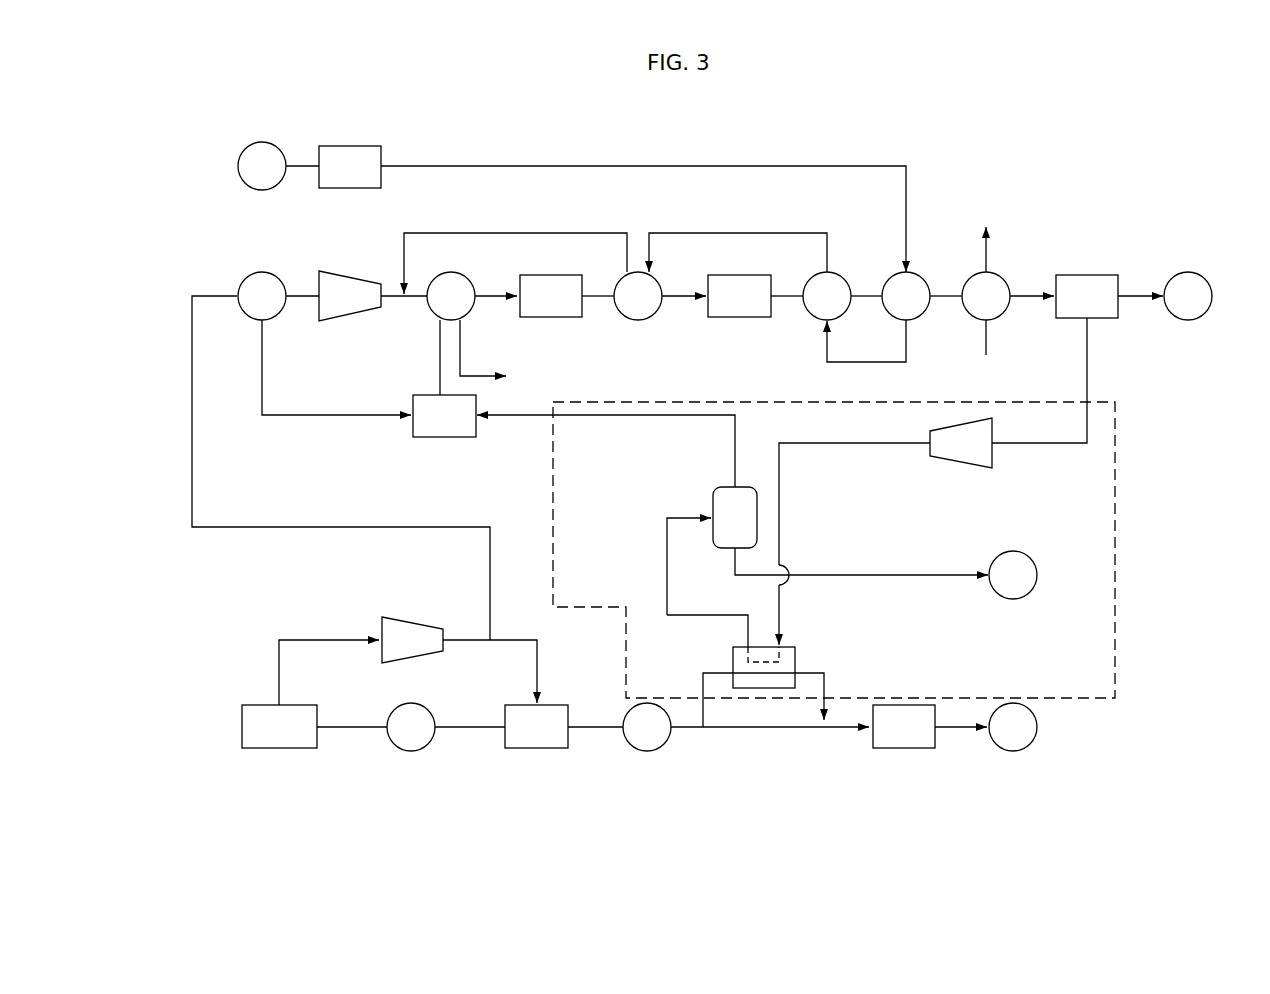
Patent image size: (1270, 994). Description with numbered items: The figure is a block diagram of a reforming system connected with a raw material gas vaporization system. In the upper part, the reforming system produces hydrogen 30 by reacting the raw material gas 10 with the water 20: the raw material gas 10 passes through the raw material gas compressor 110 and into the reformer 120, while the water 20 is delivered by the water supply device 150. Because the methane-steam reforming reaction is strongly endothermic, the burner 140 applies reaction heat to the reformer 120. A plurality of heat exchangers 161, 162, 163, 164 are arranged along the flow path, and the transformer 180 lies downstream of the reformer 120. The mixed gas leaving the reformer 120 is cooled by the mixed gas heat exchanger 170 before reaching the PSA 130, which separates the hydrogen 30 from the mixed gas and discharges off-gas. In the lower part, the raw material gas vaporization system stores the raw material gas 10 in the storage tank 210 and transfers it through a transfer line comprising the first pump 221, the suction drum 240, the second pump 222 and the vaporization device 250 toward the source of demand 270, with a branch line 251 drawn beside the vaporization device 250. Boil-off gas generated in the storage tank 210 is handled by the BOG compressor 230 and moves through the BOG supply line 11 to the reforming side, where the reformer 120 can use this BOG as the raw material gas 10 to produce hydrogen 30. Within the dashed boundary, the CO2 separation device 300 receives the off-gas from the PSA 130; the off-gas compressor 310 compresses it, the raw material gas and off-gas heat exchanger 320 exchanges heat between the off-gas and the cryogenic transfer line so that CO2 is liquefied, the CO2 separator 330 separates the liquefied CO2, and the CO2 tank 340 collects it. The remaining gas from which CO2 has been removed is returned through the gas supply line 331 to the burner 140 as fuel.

The raw material gas 10 is at (262, 274).
The BOG supply line 11 is at (287, 527).
The water 20 is at (262, 142).
The hydrogen 30 is at (1188, 272).
The raw material gas compressor 110 is at (348, 272).
The reformer 120 is at (552, 318).
The Pressure Swing Adsorption (PSA) 130 is at (1087, 275).
The burner 140 is at (443, 437).
The water supply device 150 is at (360, 146).
The heat exchanger 161 is at (922, 313).
The heat exchanger 162 is at (810, 313).
The heat exchanger 163 is at (638, 320).
The heat exchanger 164 is at (432, 313).
The mixed gas heat exchanger 170 is at (1002, 313).
The transformer 180 is at (730, 318).
The storage tank 210 is at (278, 748).
The first pump 221 is at (410, 751).
The second pump 222 is at (646, 751).
The BOG compressor 230 is at (412, 617).
The suction drum 240 is at (537, 748).
The vaporization device 250 is at (903, 748).
The bypass line 251 is at (826, 689).
The source of demand 270 is at (1012, 751).
The CO2 separation device 300 is at (1116, 543).
The off-gas compressor 310 is at (958, 468).
The raw material gas and off-gas heat exchanger 320 is at (733, 660).
The CO2 separator 330 is at (717, 487).
The gas supply line 331 is at (577, 416).
The CO2 tank 340 is at (1012, 599).